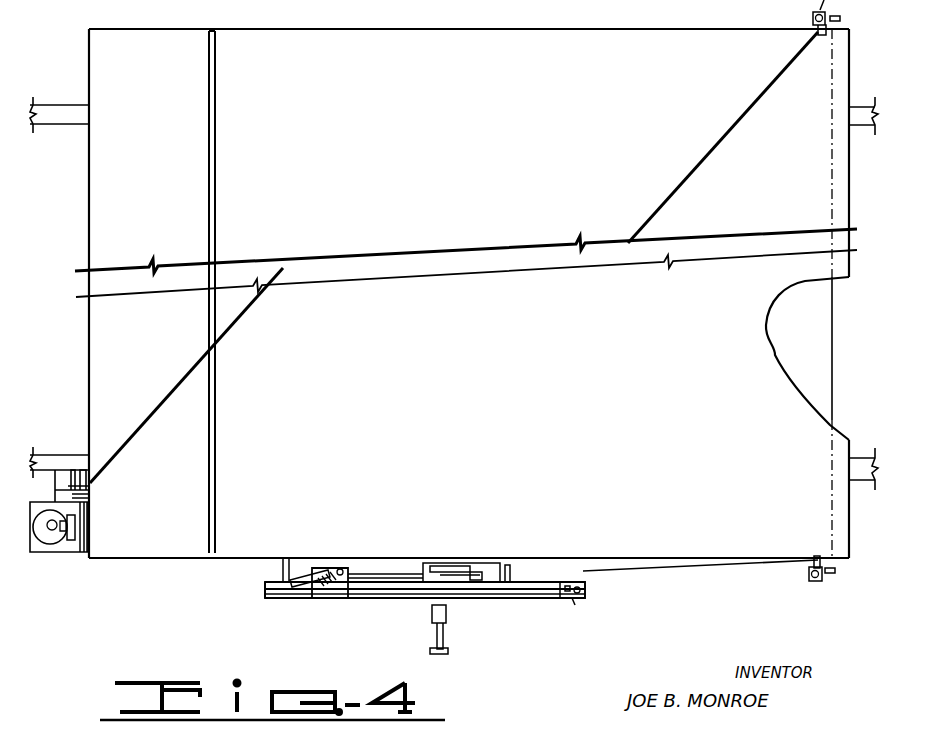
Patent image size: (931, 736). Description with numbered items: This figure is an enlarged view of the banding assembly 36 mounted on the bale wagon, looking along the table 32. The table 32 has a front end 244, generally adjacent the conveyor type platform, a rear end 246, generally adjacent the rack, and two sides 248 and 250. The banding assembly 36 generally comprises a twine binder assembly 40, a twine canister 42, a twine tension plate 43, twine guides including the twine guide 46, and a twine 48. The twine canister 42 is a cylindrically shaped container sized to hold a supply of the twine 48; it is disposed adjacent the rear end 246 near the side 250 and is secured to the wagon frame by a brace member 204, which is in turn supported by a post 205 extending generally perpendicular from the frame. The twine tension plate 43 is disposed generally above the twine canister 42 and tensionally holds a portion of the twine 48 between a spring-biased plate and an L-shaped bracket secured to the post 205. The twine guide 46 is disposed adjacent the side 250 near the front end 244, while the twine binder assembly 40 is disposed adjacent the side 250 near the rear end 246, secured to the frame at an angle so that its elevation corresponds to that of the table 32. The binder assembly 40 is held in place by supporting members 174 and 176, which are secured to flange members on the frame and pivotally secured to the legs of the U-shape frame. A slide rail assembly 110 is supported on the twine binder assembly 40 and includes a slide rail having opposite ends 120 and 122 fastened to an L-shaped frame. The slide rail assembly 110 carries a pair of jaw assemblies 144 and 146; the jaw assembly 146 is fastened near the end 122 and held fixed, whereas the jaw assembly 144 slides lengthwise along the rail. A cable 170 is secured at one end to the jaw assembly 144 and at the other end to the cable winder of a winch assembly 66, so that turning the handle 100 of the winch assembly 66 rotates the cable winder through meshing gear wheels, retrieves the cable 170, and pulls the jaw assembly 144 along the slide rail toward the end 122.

The table 32 is at (652, 38).
The side 248 is at (458, 30).
The front end 244 is at (852, 160).
The rear end 246 is at (88, 350).
The banding assembly 36 is at (203, 560).
The side 250 is at (262, 585).
The twine 48 is at (832, 330).
The twine guide 46 is at (812, 582).
The brace member 204 is at (74, 498).
The post 205 is at (75, 497).
The twine canister 42 is at (50, 538).
The twine tension plate 43 is at (72, 552).
The twine binder assembly 40 is at (393, 602).
The end 120 is at (252, 598).
The supporting member 174 is at (290, 560).
The jaw assembly 144 is at (322, 600).
The cable 170 is at (378, 578).
The winch assembly 66 is at (420, 565).
The supporting member 176 is at (510, 562).
The end 122 is at (590, 588).
The jaw assembly 146 is at (572, 603).
The slide rail assembly 110 is at (528, 600).
The handle 100 is at (442, 637).